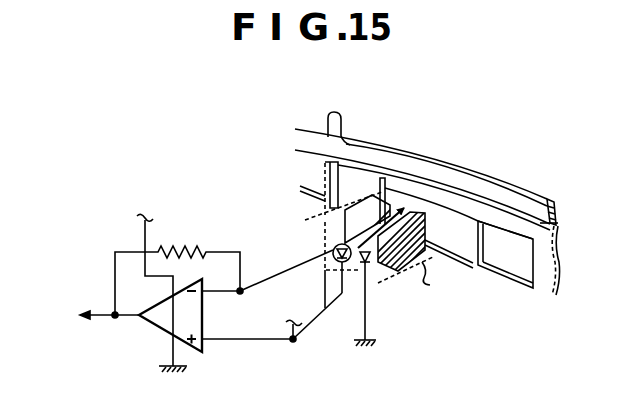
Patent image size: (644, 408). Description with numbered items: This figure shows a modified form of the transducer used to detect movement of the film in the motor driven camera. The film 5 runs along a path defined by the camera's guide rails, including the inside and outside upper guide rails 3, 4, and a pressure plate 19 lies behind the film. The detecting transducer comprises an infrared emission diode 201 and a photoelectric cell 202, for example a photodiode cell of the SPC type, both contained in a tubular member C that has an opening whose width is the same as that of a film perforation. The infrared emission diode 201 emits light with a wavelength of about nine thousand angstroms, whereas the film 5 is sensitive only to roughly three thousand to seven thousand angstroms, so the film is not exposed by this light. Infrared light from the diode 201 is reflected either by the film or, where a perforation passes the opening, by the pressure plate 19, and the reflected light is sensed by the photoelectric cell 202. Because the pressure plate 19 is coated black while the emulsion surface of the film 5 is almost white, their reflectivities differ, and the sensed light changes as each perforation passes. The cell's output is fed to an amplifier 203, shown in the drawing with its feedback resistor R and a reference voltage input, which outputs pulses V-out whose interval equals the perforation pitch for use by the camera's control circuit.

The upper guide rail 3 is at (454, 262).
The upper guide rail 4 is at (459, 218).
The film 5 is at (488, 213).
The pressure plate 19 is at (528, 198).
The tubular member C is at (367, 190).
The infrared emission diode 201 is at (380, 266).
The photoelectric cell 202 is at (328, 247).
The amplifier 203 is at (175, 286).
The resistor R is at (182, 233).